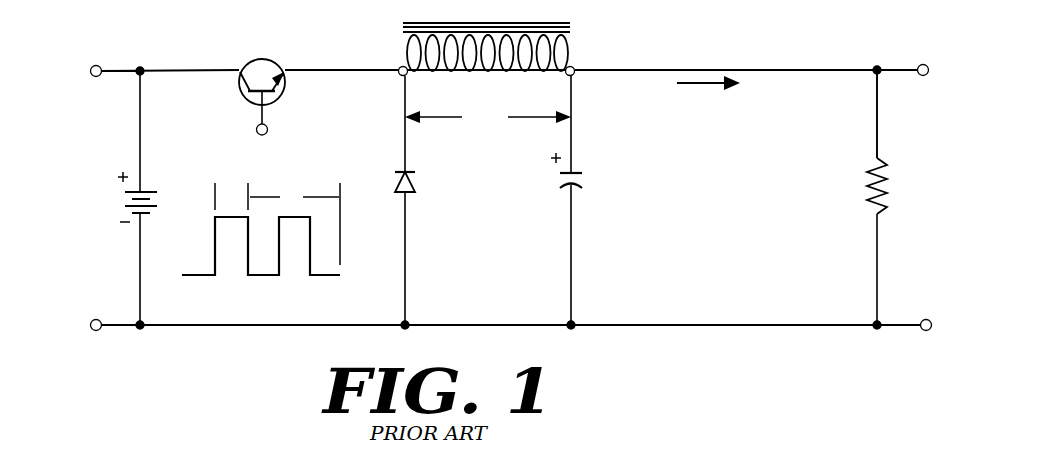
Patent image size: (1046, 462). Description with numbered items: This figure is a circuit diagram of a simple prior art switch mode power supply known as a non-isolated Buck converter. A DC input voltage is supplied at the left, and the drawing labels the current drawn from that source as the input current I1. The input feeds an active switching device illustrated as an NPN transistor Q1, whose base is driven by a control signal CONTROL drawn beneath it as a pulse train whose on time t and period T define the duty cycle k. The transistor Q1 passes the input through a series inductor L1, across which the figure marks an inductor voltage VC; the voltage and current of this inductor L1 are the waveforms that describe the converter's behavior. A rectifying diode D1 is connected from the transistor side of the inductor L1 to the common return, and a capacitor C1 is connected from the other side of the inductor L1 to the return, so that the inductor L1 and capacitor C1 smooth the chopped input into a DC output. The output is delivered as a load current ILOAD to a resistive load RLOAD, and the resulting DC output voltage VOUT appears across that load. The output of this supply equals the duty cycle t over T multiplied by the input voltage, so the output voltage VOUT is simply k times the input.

The input current I1 is at (125, 53).
The NPN transistor Q1 is at (262, 80).
The control signal waveform CONTROL is at (261, 209).
The series inductor L1 is at (487, 38).
The inductor voltage VC is at (488, 120).
The rectifying diode D1 is at (422, 183).
The capacitor C1 is at (582, 174).
The load current ILOAD is at (708, 99).
The resistive load RLOAD is at (842, 186).
The DC output voltage VOUT is at (902, 114).